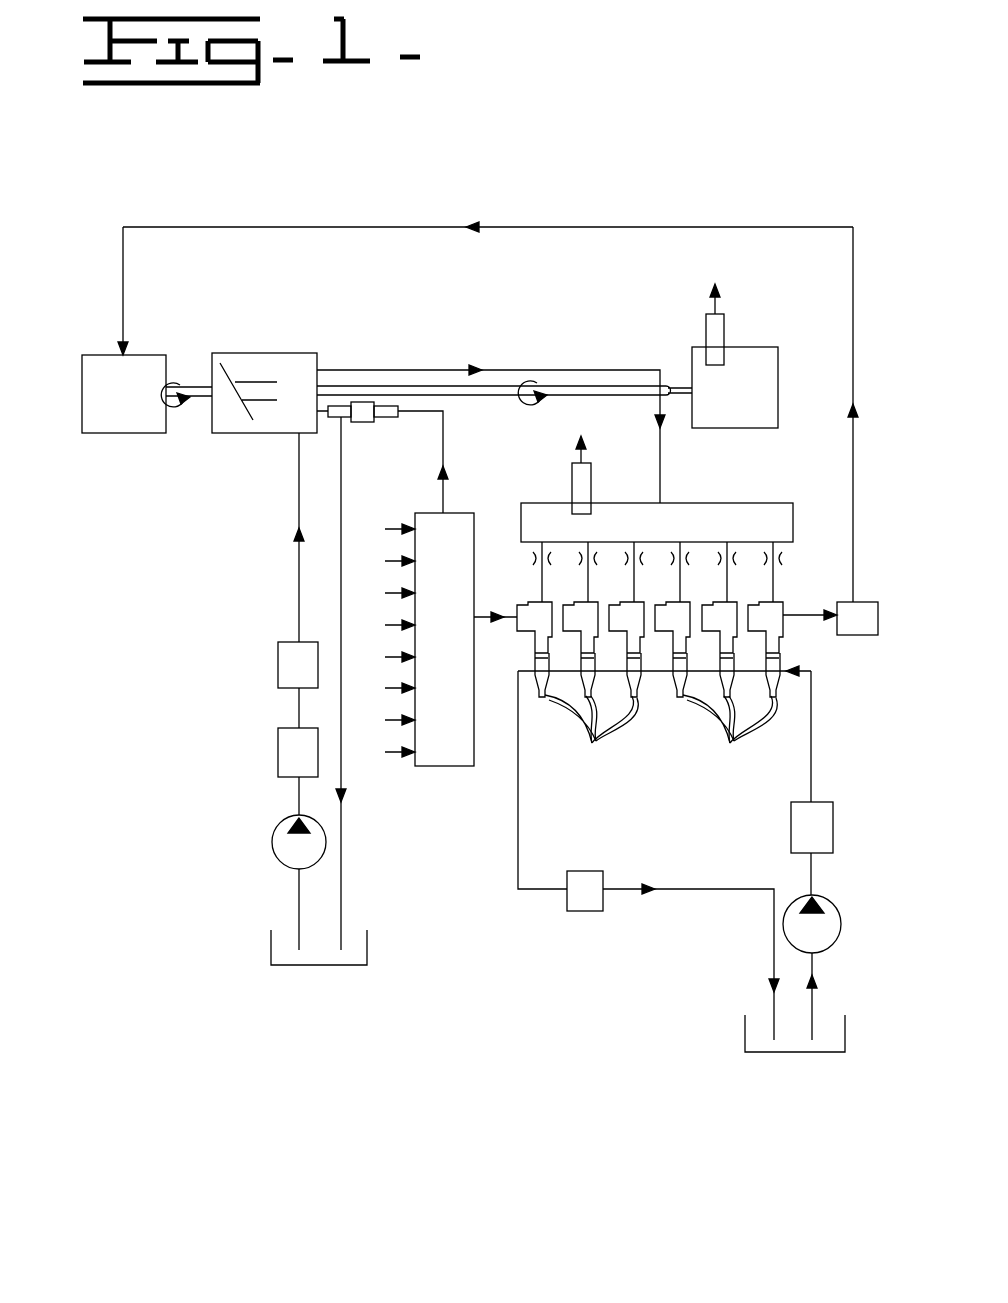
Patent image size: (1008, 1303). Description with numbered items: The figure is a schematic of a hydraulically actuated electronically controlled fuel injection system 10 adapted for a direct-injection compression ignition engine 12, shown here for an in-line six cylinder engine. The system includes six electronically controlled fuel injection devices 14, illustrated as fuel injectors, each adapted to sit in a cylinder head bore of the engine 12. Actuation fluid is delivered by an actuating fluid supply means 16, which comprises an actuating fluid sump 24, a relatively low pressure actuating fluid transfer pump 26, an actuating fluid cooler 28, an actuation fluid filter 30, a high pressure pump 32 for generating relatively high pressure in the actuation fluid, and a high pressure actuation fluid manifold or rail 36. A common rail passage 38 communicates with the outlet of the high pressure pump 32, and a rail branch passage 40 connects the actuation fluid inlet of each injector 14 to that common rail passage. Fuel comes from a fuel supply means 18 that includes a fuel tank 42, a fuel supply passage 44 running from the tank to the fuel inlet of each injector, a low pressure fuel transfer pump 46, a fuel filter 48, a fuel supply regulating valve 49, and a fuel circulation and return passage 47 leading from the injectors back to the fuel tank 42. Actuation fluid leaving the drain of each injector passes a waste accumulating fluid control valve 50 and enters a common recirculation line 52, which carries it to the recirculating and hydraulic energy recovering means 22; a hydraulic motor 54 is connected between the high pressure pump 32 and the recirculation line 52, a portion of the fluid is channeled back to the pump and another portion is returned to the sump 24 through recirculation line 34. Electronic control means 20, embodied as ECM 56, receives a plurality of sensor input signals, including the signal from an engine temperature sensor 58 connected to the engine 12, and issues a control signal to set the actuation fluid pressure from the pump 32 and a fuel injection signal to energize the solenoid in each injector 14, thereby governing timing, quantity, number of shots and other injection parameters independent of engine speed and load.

The fuel injection system 10 is at (206, 190).
The engine 12 is at (746, 400).
The fuel injection devices 14 is at (661, 730).
The actuating fluid supply means 16 is at (338, 1005).
The fuel supply means 18 is at (791, 1078).
The electronic control means 20 is at (446, 784).
The recirculating and hydraulic energy recovering means 22 is at (89, 252).
The actuating fluid sump 24 is at (368, 945).
The actuating fluid transfer pump 26 is at (273, 846).
The actuating fluid cooler 28 is at (278, 746).
The actuation fluid filter 30 is at (278, 676).
The high pressure pump 32 is at (266, 433).
The recirculation line 34 is at (341, 858).
The actuation fluid manifold or rail 36 is at (705, 490).
The common rail passage 38 is at (563, 502).
The rail branch passage 40 is at (774, 572).
The fuel tank 42 is at (745, 1038).
The fuel supply passage 44 is at (811, 778).
The fuel transfer pump 46 is at (838, 908).
The fuel circulation and return passage 47 is at (774, 958).
The fuel filter 48 is at (833, 823).
The fuel supply regulating valve 49 is at (582, 912).
The waste accumulating fluid control valve 50 is at (870, 629).
The common recirculation line 52 is at (300, 227).
The hydraulic motor 54 is at (136, 404).
The ECM 56 is at (458, 630).
The engine temperature sensor 58 is at (725, 333).